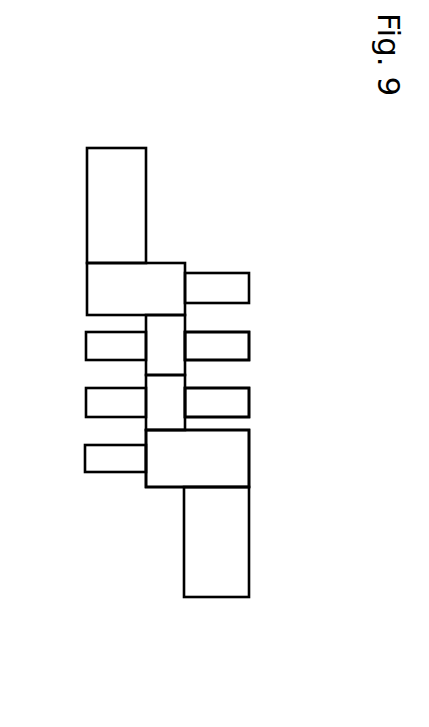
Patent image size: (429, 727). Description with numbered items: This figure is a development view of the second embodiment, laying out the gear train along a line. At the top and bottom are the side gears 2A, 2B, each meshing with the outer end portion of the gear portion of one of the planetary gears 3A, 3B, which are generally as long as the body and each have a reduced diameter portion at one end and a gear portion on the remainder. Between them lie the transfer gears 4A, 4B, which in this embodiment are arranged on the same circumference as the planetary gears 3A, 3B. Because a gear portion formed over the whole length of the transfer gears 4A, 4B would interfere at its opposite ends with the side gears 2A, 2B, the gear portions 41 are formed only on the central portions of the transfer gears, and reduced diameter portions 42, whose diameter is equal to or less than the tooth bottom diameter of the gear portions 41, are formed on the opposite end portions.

The side gear 2A is at (209, 598).
The side gear 2B is at (115, 147).
The planetary gear 3A is at (216, 487).
The planetary gear 3B is at (160, 260).
The gear portion 41 is at (162, 332).
The reduced diameter portion 42 is at (97, 348).
The transfer gear 4A is at (250, 405).
The transfer gear 4B is at (250, 347).